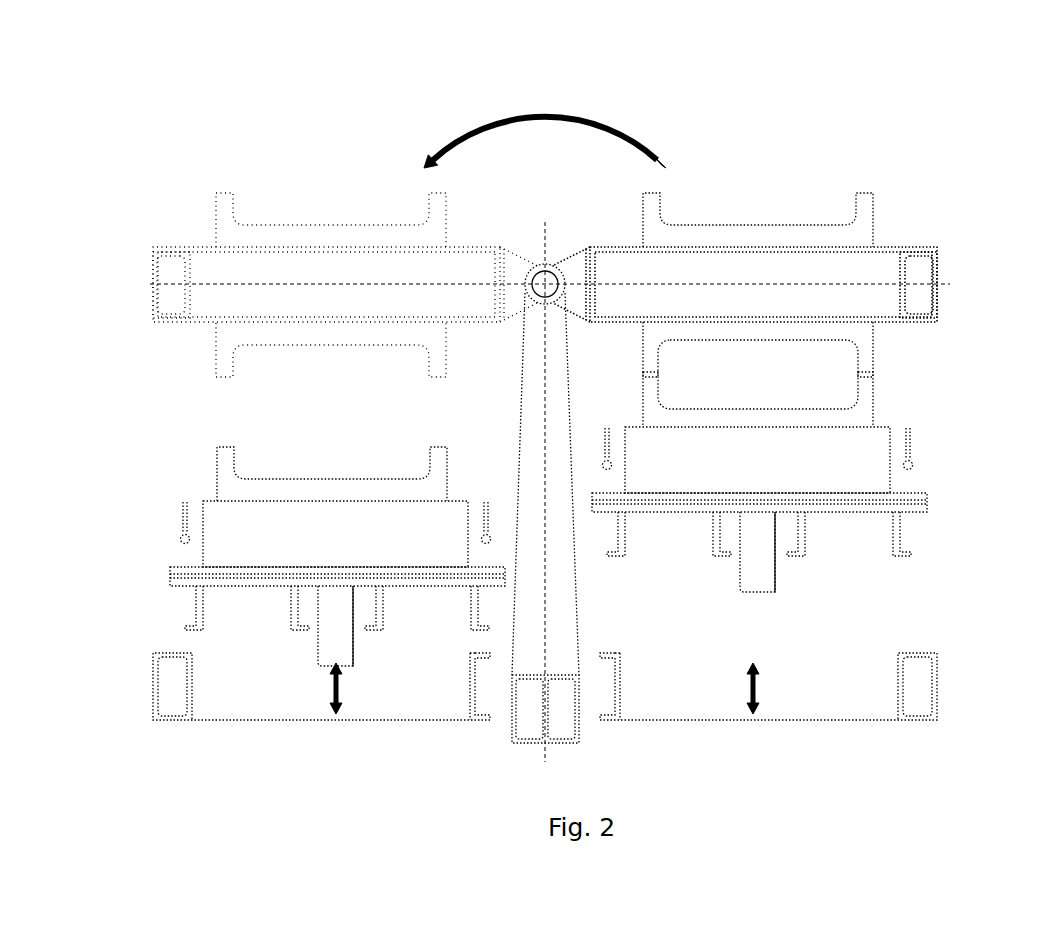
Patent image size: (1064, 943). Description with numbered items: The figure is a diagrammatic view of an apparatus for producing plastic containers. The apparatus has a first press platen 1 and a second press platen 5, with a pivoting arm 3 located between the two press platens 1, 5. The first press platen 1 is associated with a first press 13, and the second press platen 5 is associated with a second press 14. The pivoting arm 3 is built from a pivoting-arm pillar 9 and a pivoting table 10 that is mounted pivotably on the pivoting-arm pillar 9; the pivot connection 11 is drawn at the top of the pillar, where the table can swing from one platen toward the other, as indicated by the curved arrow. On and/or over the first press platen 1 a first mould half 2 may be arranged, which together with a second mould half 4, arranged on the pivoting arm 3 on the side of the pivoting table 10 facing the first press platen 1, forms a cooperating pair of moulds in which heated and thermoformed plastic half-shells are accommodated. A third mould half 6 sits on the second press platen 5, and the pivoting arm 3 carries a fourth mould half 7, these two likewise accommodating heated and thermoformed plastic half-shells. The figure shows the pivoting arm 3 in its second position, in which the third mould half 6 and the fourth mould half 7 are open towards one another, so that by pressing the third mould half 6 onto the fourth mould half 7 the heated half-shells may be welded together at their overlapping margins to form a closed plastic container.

The first press platen 1 is at (260, 543).
The first mould half 2 is at (265, 490).
The pivoting arm 3 is at (662, 273).
The second mould half 4 is at (798, 233).
The second press platen 5 is at (808, 465).
The third mould half 6 is at (827, 414).
The fourth mould half 7 is at (830, 328).
The pivoting-arm pillar 9 is at (555, 607).
The pivoting table 10 is at (798, 263).
The pivot 11 is at (537, 277).
The first press 13 is at (336, 636).
The second press 14 is at (757, 563).